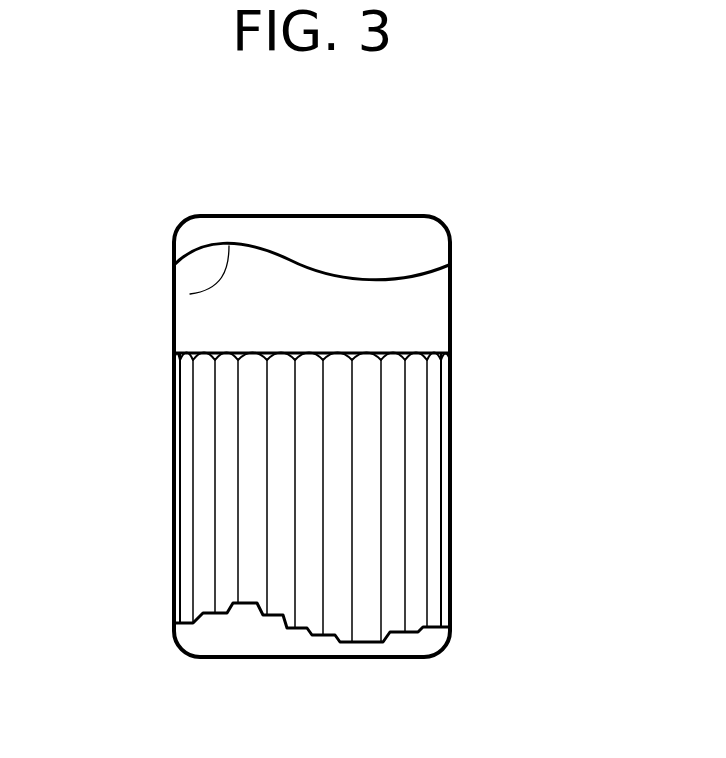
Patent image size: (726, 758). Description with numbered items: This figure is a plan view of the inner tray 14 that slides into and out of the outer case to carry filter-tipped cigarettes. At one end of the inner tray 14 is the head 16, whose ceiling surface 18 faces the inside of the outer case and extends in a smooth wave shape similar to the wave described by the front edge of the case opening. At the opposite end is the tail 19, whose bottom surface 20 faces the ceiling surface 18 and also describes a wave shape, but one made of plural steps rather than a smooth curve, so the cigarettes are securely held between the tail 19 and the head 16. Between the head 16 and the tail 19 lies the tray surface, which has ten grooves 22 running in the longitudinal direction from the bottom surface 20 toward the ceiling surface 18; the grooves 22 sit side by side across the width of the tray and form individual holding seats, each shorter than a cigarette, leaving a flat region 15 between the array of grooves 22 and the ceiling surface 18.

The inner tray 14 is at (459, 323).
The flat region 15 is at (336, 329).
The head 16 is at (334, 236).
The ceiling surface 18 is at (190, 294).
The tail 19 is at (250, 638).
The bottom surface 20 is at (214, 612).
The grooves 22 is at (204, 482).